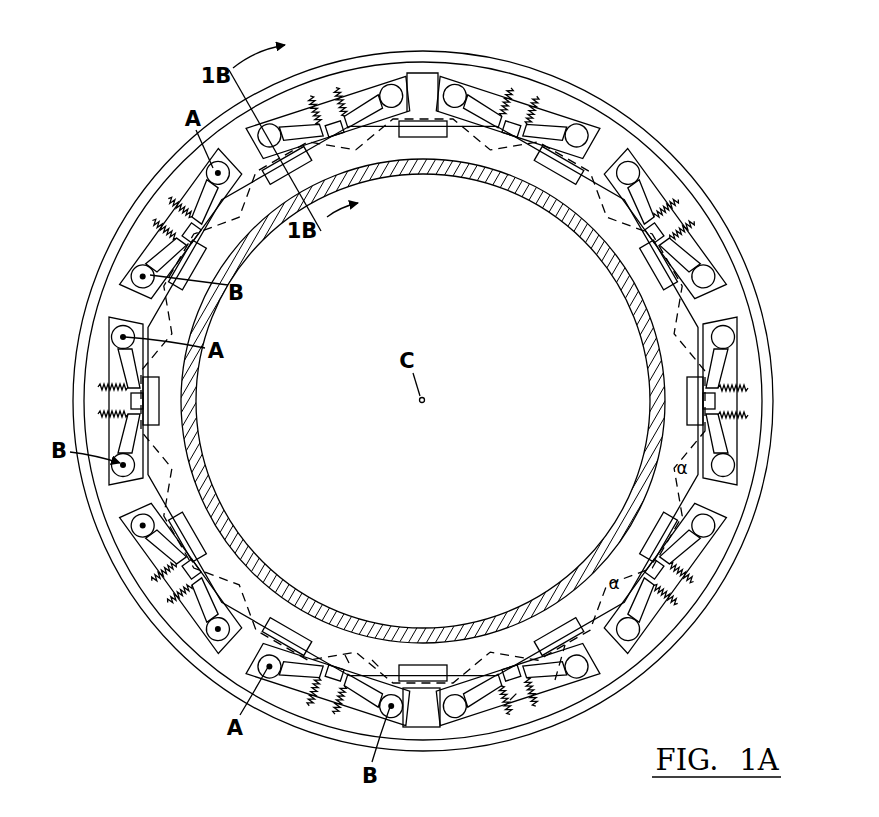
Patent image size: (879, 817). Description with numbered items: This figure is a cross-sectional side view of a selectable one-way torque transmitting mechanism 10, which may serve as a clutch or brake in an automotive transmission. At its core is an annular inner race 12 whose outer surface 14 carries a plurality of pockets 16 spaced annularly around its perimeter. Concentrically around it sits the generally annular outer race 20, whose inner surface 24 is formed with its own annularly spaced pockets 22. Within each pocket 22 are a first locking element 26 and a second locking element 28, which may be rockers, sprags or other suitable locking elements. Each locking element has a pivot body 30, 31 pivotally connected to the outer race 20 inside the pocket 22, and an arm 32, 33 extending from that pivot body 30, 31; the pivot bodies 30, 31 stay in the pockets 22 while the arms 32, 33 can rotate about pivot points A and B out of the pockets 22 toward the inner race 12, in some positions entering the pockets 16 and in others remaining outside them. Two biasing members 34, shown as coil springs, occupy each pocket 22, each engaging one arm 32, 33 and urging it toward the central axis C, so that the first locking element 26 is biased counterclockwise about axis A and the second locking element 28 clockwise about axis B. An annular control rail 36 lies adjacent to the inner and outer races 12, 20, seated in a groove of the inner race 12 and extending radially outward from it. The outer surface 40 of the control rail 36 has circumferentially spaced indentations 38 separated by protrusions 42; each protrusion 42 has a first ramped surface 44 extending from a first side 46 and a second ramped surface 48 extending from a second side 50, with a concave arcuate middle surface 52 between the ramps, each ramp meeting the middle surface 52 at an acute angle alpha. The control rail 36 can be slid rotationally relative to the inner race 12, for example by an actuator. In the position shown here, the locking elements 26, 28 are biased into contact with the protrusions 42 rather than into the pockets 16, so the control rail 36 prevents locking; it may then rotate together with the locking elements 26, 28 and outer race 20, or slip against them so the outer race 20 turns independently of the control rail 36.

The selectable one-way torque transmitting mechanism 10 is at (728, 106).
The inner race 12 is at (738, 489).
The outer surface 14 is at (382, 125).
The pockets 16 is at (575, 170).
The outer race 20 is at (76, 482).
The pockets 22 is at (112, 345).
The inner surface 24 is at (148, 493).
The first locking element 26 is at (118, 337).
The second locking element 28 is at (118, 440).
The pivot body 30 is at (137, 527).
The pivot body 31 is at (200, 633).
The arm 32 is at (200, 605).
The arm 33 is at (186, 620).
The biasing members 34 is at (505, 108).
The control rail 36 is at (421, 118).
The indentations 38 is at (333, 118).
The outer surface 40 is at (396, 124).
The protrusions 42 is at (693, 402).
The first ramped surface 44 is at (555, 680).
The first side 46 is at (545, 688).
The second ramped surface 48 is at (510, 700).
The second side 50 is at (455, 706).
The concave arcuate middle surface 52 is at (420, 692).